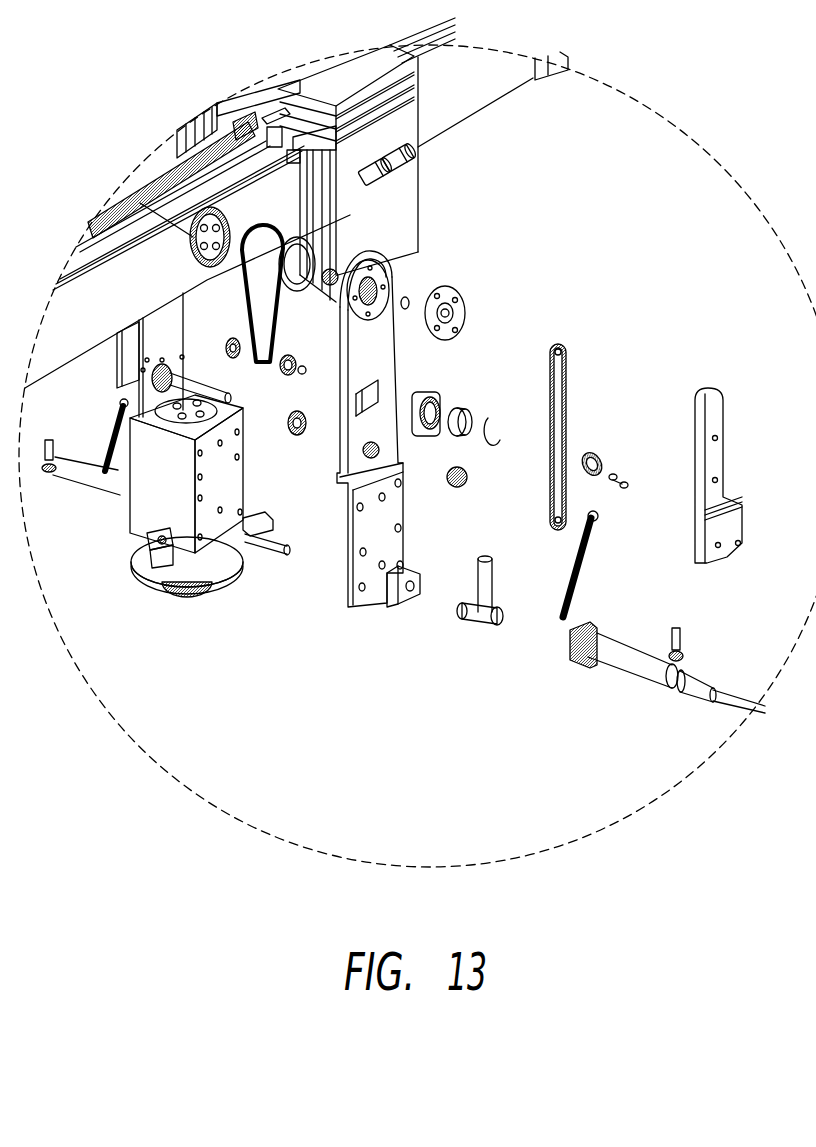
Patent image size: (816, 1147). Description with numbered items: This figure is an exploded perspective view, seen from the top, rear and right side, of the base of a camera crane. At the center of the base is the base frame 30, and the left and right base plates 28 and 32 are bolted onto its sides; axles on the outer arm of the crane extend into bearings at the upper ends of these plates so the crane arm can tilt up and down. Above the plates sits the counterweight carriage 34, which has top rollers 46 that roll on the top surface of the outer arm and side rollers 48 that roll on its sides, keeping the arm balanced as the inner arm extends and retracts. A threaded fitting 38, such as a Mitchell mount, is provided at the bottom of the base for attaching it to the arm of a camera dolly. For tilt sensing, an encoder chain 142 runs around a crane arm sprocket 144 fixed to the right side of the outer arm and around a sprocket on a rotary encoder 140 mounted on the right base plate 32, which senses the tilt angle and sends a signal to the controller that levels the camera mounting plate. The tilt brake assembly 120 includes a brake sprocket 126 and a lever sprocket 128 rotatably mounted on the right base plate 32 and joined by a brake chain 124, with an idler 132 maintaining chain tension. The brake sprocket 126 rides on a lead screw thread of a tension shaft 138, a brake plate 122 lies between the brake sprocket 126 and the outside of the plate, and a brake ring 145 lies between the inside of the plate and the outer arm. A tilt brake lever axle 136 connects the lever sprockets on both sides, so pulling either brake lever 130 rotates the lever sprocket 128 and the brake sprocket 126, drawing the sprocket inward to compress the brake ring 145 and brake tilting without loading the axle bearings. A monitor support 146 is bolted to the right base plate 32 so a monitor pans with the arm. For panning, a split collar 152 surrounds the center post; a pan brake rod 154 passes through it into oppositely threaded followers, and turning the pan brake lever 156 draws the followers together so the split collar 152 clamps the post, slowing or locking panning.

The left base plate 28 is at (385, 380).
The base frame 30 is at (137, 498).
The right base plate 32 is at (157, 343).
The counterweight carriage 34 is at (410, 125).
The threaded fitting 38 is at (208, 592).
The top rollers 46 is at (245, 110).
The side rollers 48 is at (292, 128).
The tilt brake assembly 120 is at (526, 326).
The brake plate 122 is at (455, 295).
The brake chain 124 is at (548, 446).
The brake sprocket 126 is at (566, 354).
The lever sprocket 128 is at (555, 524).
The brake lever 130 is at (108, 437).
The idler 132 is at (600, 457).
The tilt brake lever axle 136 is at (188, 380).
The tension shaft 138 is at (335, 270).
The rotary encoder 140 is at (480, 414).
The encoder chain 142 is at (260, 372).
The crane arm sprocket 144 is at (120, 192).
The brake ring 145 is at (308, 246).
The monitor support 146 is at (98, 482).
The split collar 152 is at (186, 562).
The pan brake rod 154 is at (270, 548).
The pan brake lever 156 is at (492, 572).